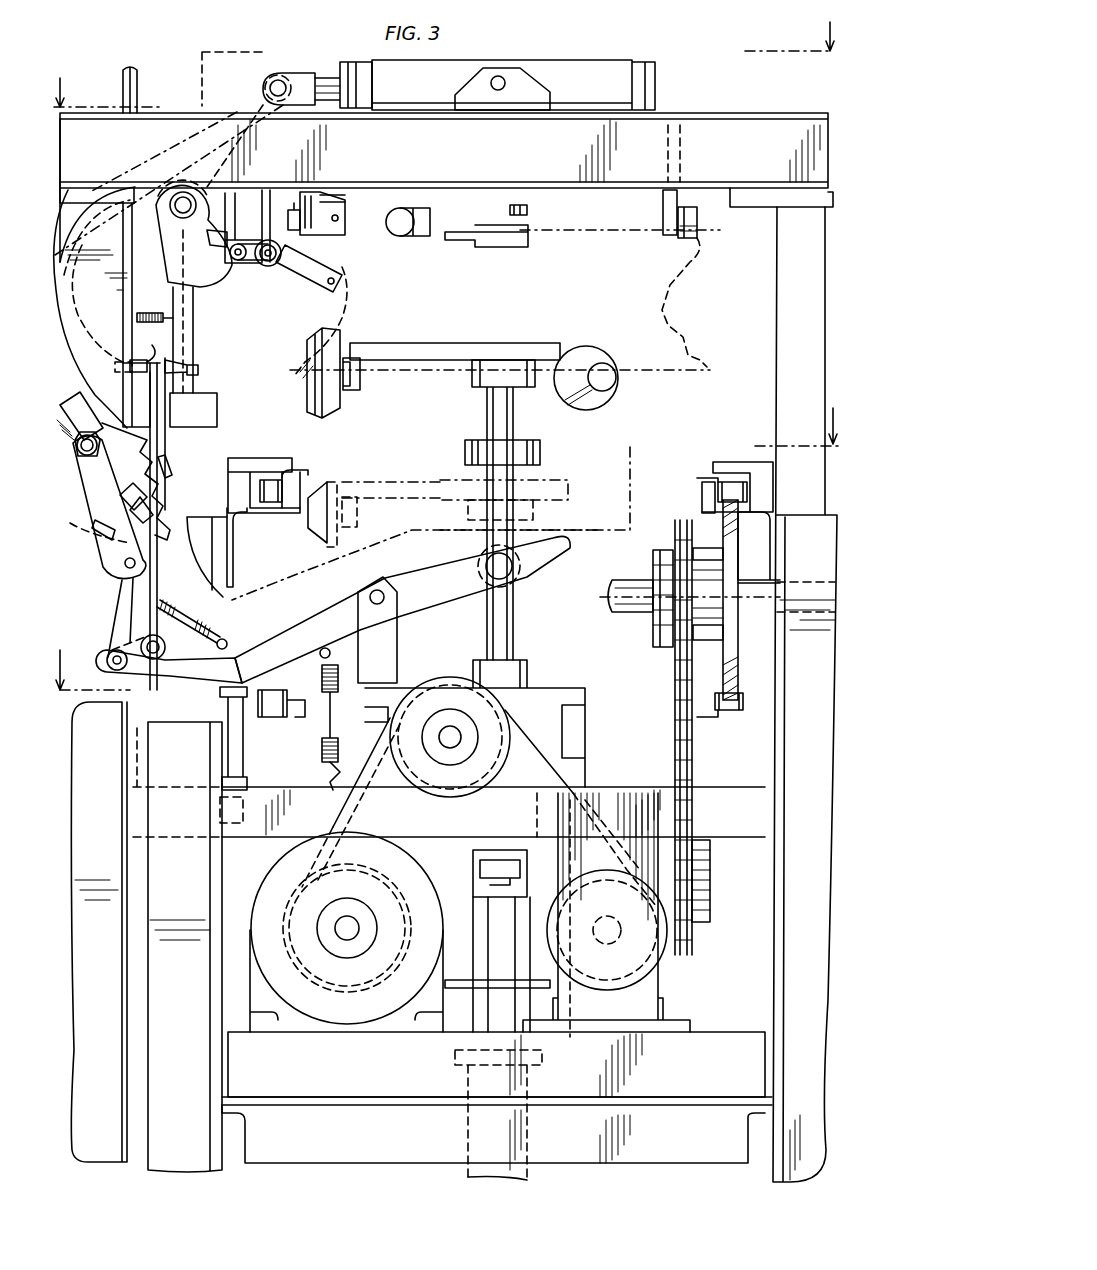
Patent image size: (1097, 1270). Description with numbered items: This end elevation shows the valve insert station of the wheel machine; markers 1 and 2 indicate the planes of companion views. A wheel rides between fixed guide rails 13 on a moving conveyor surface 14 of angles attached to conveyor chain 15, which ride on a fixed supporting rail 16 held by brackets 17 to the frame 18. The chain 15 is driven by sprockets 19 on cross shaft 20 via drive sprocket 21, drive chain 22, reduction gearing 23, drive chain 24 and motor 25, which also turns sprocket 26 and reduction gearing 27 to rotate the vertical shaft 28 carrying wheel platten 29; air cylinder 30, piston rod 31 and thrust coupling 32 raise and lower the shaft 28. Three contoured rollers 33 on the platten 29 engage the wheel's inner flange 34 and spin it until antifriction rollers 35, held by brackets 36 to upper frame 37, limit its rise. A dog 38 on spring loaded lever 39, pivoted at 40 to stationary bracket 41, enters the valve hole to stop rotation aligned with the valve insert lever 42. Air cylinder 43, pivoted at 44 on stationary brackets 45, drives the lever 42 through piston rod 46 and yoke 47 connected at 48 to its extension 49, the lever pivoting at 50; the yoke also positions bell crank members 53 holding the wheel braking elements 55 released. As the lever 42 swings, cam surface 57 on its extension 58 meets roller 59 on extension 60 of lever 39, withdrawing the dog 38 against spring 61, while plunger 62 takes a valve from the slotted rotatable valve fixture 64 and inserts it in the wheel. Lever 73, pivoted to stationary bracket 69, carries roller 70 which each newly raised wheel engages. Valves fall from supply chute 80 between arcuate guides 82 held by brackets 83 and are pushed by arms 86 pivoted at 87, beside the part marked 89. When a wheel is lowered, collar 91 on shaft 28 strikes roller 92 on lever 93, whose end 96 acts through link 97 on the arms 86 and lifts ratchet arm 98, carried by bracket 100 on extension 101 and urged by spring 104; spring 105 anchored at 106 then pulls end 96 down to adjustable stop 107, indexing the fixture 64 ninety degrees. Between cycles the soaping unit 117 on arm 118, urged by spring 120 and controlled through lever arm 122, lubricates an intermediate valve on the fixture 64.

The section line 1- 1 is at (444, 64).
The section line 2- 2 is at (449, 536).
The fixed guide rails 13 is at (268, 460).
The moving conveyor surface 14 is at (298, 474).
The conveyor chain 15 is at (275, 690).
The fixed supporting rail 16 is at (300, 492).
The brackets 17 is at (232, 573).
The frame 18 is at (225, 592).
The sprockets 19 is at (735, 675).
The cross shaft 20 is at (636, 598).
The drive sprocket 21 is at (668, 660).
The drive chain 22 is at (690, 750).
The reduction gearing 23 is at (656, 962).
The drive chain 24 is at (572, 768).
The motor 25 is at (268, 890).
The sprocket 26 is at (510, 740).
The reduction gearing 27 is at (536, 692).
The vertical shaft 28 is at (508, 643).
The wheel platten 29 is at (452, 348).
The air cylinder 30 is at (527, 1178).
The piston rod 31 is at (492, 970).
The thrust coupling 32 is at (497, 897).
The contoured rollers 33 is at (328, 350).
The inner flange 34 is at (308, 365).
The antifriction rollers 35 is at (402, 236).
The brackets 36 is at (662, 212).
The upper frame 37 is at (700, 132).
The dog 38 is at (335, 275).
The spring loaded lever 39 is at (310, 285).
The pivot 40 is at (267, 266).
The stationary bracket 41 is at (270, 196).
The valve insert lever 42 is at (110, 272).
The air cylinder 43 is at (603, 70).
The pivot 44 is at (505, 82).
The stationary brackets 45 is at (543, 90).
The piston rod 46 is at (326, 84).
The yoke 47 is at (300, 72).
The pivotal connection 48 is at (280, 82).
The extension 49 is at (250, 104).
The pivotal connection 50 is at (188, 196).
The bell crank members 53 is at (460, 240).
The wheel braking elements 55 is at (512, 212).
The cam surface 57 is at (240, 246).
The lever extension 58 is at (195, 285).
The roller 59 is at (208, 268).
The extension 60 is at (238, 243).
The spring 61 is at (280, 252).
The cylindrical plunger 62 is at (150, 368).
The valve fixture 64 is at (160, 449).
The stationary bracket 69 is at (368, 214).
The roller 70 is at (304, 232).
The lever 73 is at (340, 226).
The supply chute 80 is at (70, 412).
The arcuate guides 82 is at (163, 470).
The brackets 83 is at (145, 494).
The arms 86 is at (98, 494).
The pivotal connection 87 is at (86, 456).
The pivot 89 is at (82, 528).
The collar 91 is at (543, 462).
The roller 92 is at (515, 572).
The lever 93 is at (458, 590).
The lever end 96 is at (175, 672).
The link 97 is at (122, 604).
The ratchet arm 98 is at (150, 515).
The bracket 100 is at (162, 652).
The extension 101 is at (117, 672).
The spring 104 is at (200, 635).
The spring 105 is at (320, 748).
The anchor 106 is at (326, 775).
The adjustable stop 107 is at (225, 702).
The soaping unit 117 is at (212, 412).
The arm 118 is at (196, 370).
The spring 120 is at (152, 314).
The lever arm 122 is at (224, 225).